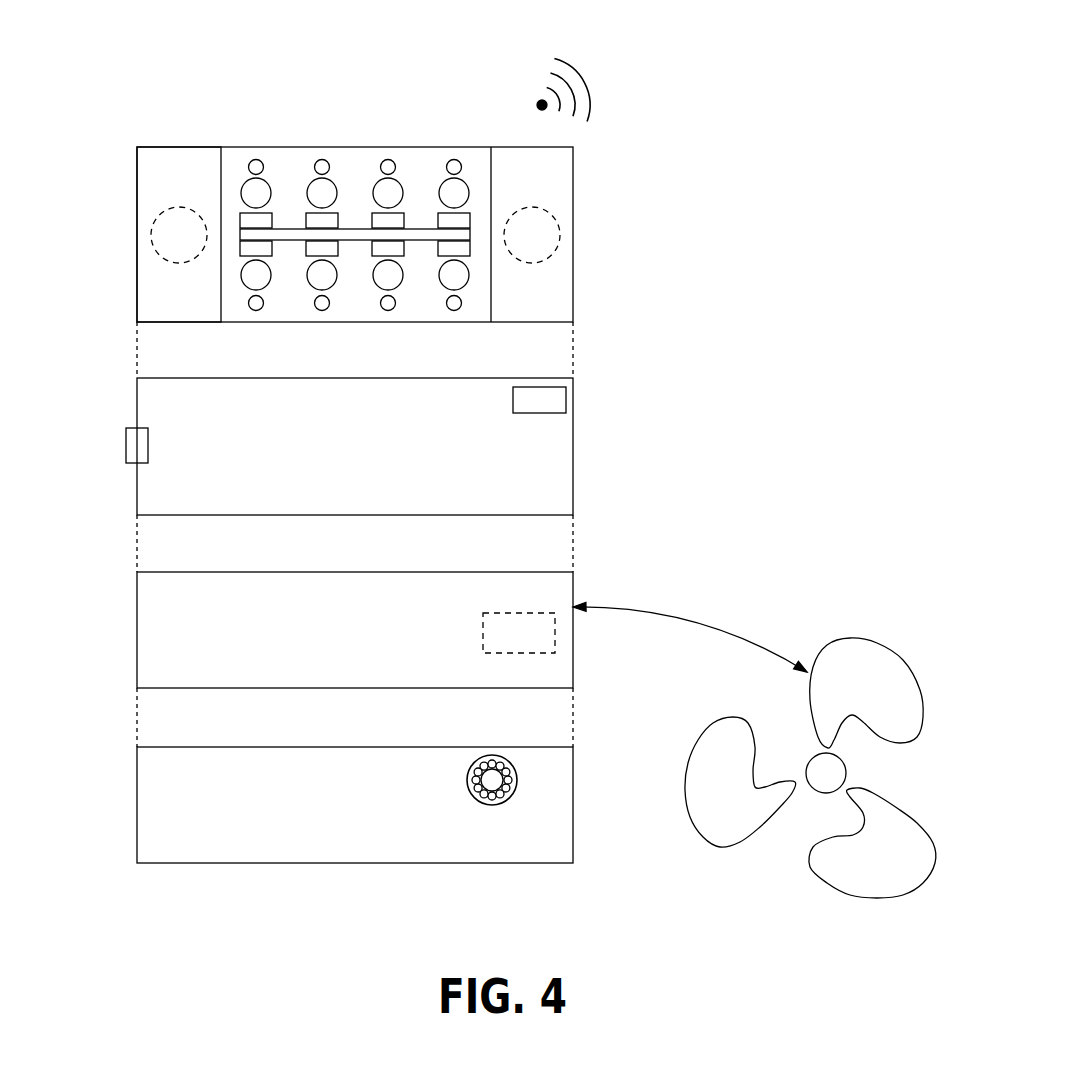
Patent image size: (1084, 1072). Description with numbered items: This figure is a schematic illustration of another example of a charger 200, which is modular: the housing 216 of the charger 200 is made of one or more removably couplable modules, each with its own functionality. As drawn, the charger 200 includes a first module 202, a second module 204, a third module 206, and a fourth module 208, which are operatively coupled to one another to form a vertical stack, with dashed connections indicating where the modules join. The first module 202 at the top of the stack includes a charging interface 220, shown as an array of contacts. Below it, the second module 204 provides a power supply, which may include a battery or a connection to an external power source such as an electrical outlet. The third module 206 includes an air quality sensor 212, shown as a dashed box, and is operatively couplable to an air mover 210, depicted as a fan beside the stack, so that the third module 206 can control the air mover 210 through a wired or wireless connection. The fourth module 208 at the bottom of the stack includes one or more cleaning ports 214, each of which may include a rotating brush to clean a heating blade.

The charger 200 is at (93, 157).
The first module 202 is at (135, 273).
The second module 204 is at (135, 410).
The third module 206 is at (135, 638).
The fourth module 208 is at (135, 815).
The air mover 210 is at (846, 769).
The air quality sensor 212 is at (506, 643).
The cleaning port 214 is at (491, 805).
The housing 216 is at (202, 147).
The charging interface 220 is at (430, 147).